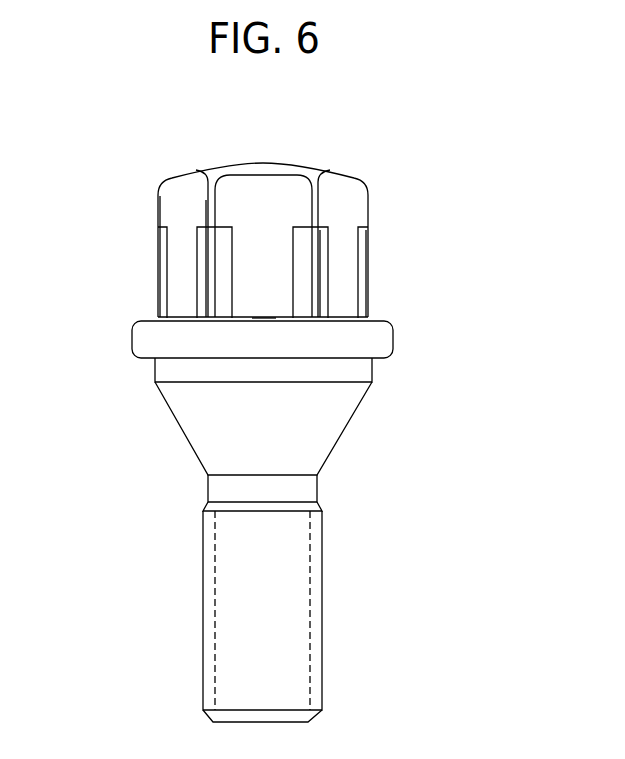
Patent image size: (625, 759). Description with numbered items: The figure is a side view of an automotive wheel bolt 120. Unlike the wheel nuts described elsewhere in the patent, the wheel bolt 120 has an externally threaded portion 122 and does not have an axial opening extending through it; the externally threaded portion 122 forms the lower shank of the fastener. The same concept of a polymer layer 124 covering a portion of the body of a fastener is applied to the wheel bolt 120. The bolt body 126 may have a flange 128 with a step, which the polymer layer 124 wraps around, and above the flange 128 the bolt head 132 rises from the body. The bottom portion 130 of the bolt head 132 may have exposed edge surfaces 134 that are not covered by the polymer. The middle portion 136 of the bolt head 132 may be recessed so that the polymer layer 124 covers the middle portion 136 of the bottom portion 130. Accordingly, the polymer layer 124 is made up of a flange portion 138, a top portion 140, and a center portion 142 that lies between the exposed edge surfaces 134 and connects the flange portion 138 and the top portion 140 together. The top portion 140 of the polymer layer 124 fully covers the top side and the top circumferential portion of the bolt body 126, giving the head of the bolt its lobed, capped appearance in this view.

The automotive wheel bolt 120 is at (197, 134).
The externally threaded portion 122 is at (322, 633).
The polymer layer 124 is at (352, 198).
The bolt body 126 is at (350, 420).
The flange 128 is at (373, 338).
The bottom portion 130 is at (343, 288).
The bolt head 132 is at (368, 252).
The exposed edge surfaces 134 is at (302, 248).
The middle portion 136 is at (178, 230).
The flange portion 138 is at (132, 338).
The top portion 140 is at (180, 195).
The center portion 142 is at (265, 278).